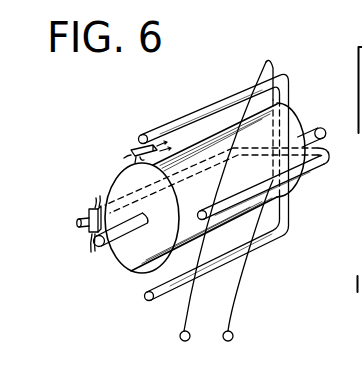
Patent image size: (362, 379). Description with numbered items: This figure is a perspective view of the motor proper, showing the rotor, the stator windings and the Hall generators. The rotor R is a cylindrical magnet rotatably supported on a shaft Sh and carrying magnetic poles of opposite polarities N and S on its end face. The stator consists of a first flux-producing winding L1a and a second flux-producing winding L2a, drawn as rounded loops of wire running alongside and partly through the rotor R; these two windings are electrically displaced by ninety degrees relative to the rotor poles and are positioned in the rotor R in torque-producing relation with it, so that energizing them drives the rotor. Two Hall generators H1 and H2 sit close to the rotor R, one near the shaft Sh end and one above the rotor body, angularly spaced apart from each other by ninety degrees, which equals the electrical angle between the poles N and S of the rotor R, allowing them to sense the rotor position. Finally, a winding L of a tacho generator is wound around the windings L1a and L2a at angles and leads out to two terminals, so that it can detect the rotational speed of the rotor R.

The winding of tacho generator L is at (266, 62).
The first flux-producing winding L1a is at (302, 173).
The second flux-producing winding L2a is at (206, 107).
The first Hall generator H1 is at (88, 212).
The second Hall generator H2 is at (131, 151).
The shaft Sh is at (112, 242).
The rotor R is at (133, 272).
The magnetic pole of north polarity N is at (140, 182).
The magnetic pole of south polarity S is at (144, 265).